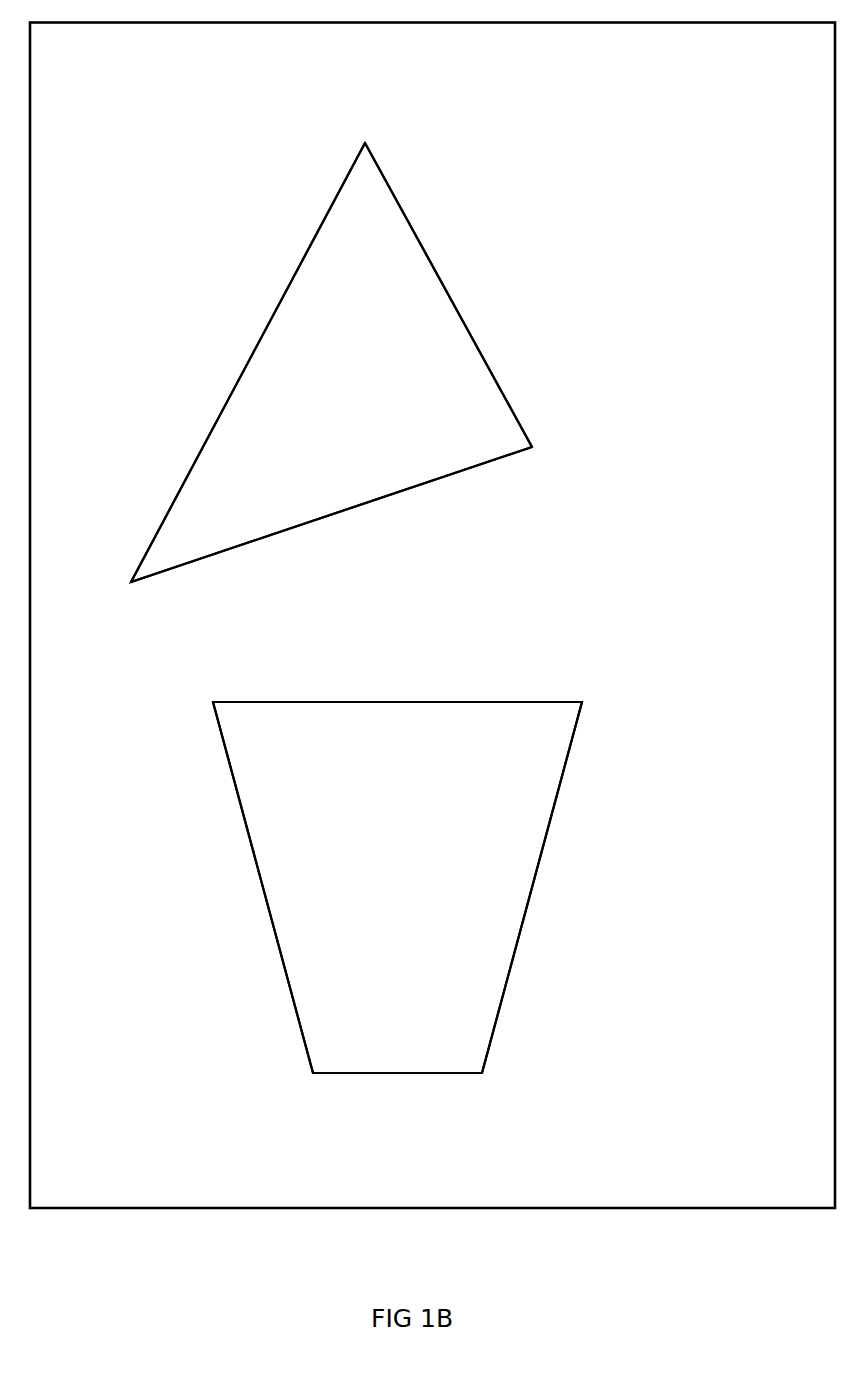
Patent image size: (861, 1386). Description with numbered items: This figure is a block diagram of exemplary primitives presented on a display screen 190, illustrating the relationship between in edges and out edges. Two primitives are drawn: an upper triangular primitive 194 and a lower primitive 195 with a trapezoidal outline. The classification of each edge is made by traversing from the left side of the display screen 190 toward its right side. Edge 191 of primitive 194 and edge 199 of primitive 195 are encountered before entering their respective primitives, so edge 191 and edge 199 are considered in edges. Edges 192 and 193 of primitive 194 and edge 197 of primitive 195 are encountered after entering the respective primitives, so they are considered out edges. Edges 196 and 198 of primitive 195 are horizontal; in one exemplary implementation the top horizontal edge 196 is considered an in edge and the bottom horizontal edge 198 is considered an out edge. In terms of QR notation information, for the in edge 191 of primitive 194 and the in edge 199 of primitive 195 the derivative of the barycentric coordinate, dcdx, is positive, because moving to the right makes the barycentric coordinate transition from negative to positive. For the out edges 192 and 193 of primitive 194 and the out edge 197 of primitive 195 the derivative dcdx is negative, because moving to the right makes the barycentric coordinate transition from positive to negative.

The display screen 190 is at (759, 96).
The edge 191 is at (286, 269).
The edge 192 is at (458, 299).
The edge 193 is at (443, 494).
The primitive 194 is at (331, 362).
The primitive 195 is at (397, 887).
The top horizontal edge 196 is at (422, 690).
The edge 197 is at (562, 891).
The bottom horizontal edge 198 is at (427, 1086).
The edge 199 is at (251, 899).